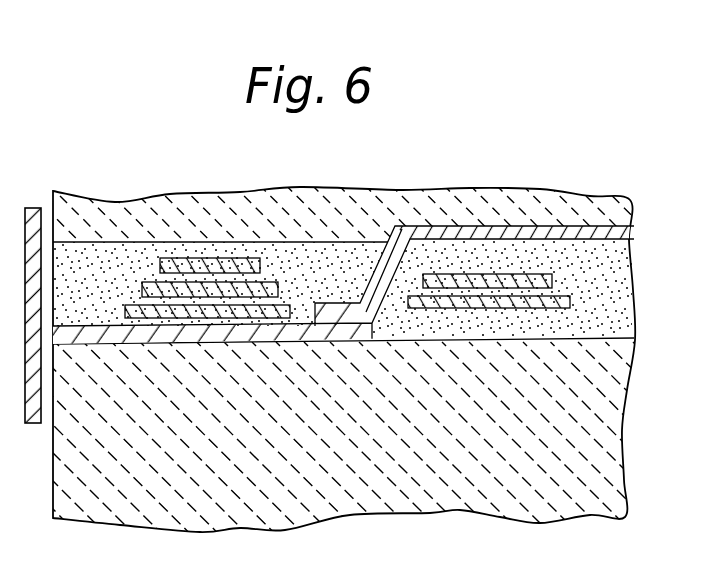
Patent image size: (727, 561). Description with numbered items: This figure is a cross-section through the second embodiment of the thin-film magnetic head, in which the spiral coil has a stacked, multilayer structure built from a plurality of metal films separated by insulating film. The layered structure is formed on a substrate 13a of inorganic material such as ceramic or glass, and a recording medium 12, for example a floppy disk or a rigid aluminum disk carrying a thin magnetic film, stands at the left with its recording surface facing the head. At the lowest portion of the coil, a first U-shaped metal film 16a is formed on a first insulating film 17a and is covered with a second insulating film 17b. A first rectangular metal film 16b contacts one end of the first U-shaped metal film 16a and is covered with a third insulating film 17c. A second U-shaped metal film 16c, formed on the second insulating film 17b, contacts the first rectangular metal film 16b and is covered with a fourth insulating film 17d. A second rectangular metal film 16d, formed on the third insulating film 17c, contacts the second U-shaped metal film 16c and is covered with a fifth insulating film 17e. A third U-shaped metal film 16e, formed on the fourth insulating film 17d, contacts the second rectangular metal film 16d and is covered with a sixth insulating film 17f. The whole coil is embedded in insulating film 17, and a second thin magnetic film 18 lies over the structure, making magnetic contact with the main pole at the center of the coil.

The recording medium 12 is at (31, 424).
The substrate 13a is at (613, 470).
The first U-shaped metal film 16a is at (291, 305).
The first rectangular metal film 16b is at (576, 300).
The second U-shaped metal film 16c is at (277, 283).
The second rectangular metal film 16d is at (549, 273).
The third U-shaped metal film 16e is at (188, 262).
The second insulating film 17 is at (617, 301).
The first insulating film 17a is at (128, 322).
The second insulating film 17b is at (143, 298).
The third insulating film 17c is at (512, 272).
The fourth insulating film 17d is at (170, 277).
The fifth insulating film 17e is at (453, 247).
The sixth insulating film 17f is at (227, 247).
The second thin magnetic film 18 is at (617, 230).